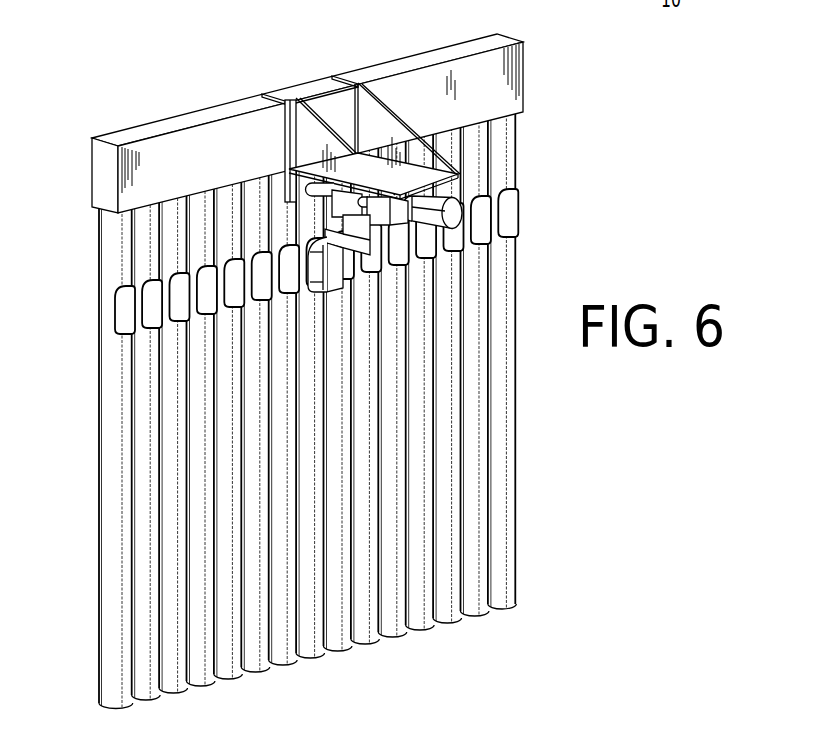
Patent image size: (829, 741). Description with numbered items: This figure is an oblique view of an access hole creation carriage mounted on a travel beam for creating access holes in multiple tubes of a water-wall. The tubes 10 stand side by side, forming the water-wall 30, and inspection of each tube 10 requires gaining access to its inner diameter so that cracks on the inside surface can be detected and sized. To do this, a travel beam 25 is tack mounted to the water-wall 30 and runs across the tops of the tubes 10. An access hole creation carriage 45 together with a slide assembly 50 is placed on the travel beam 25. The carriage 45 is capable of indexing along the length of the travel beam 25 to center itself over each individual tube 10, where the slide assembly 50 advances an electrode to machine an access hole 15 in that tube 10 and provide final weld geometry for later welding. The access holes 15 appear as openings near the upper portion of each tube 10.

The tube 10 is at (106, 443).
The access hole 15 is at (503, 213).
The travel beam 25 is at (190, 140).
The water-wall 30 is at (337, 389).
The access hole creation carriage 45 is at (330, 86).
The slide assembly 50 is at (407, 170).